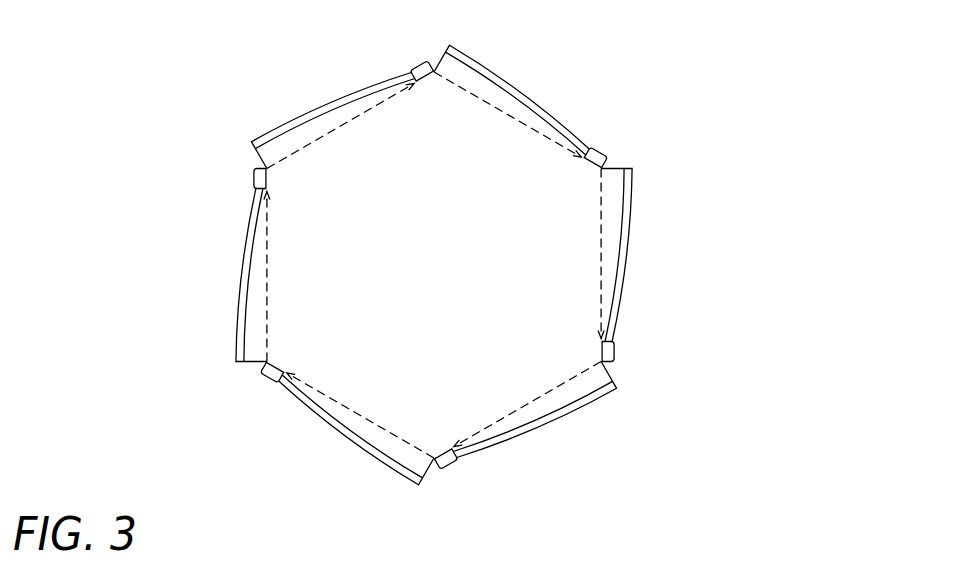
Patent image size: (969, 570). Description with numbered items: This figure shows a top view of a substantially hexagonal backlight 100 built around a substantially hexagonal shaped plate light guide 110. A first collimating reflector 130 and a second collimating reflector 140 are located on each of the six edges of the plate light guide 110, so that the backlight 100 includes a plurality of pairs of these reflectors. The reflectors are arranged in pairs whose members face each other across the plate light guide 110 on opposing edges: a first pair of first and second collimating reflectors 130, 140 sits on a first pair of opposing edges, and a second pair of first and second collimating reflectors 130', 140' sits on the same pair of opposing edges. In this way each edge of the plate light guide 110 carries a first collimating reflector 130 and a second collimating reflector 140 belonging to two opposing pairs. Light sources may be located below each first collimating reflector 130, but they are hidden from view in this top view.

The backlight 100 is at (490, 265).
The plate light guide 110 is at (455, 280).
The first collimating reflector 130 is at (215, 169).
The first collimating reflector 130' is at (658, 360).
The second collimating reflector 140 is at (659, 255).
The second collimating reflector 140' is at (205, 275).